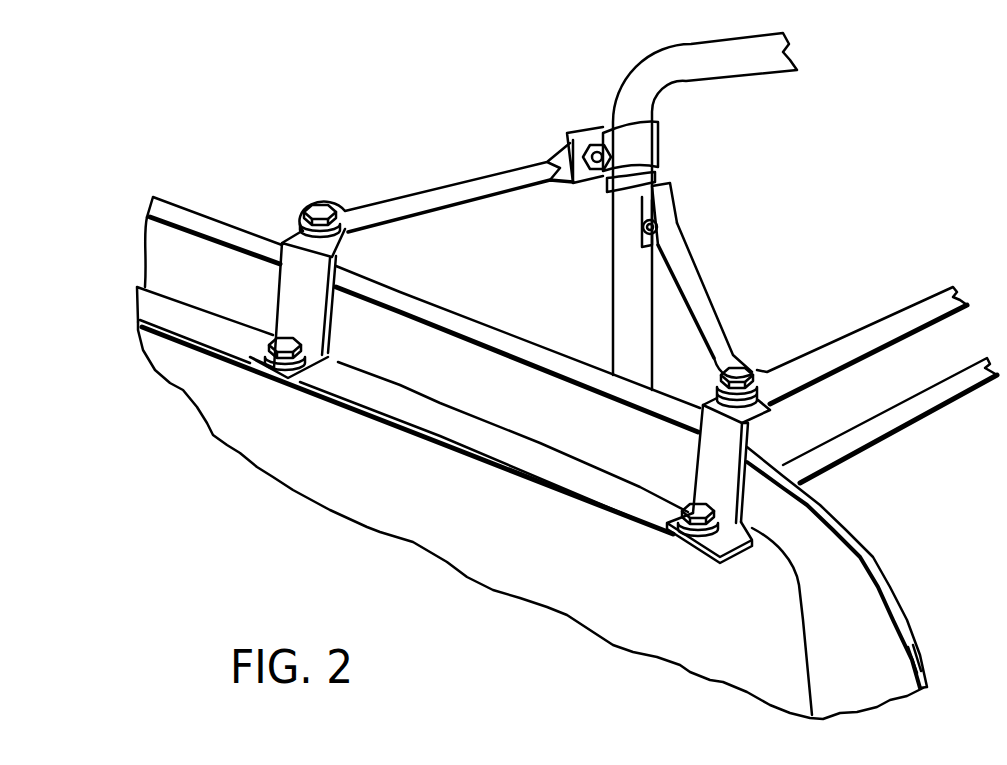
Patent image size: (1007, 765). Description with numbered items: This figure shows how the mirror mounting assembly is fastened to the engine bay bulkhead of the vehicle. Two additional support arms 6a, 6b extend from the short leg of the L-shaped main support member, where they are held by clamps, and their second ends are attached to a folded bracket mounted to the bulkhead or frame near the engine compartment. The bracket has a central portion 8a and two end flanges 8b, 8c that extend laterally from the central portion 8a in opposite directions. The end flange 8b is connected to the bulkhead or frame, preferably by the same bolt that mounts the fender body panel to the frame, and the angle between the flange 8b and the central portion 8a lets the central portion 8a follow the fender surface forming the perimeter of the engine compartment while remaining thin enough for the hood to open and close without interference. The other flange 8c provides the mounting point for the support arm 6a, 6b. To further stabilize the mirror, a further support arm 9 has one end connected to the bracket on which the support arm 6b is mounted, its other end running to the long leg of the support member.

The additional support arm 6a is at (470, 178).
The additional support arm 6b is at (703, 277).
The central portion 8a is at (712, 455).
The end flange 8b is at (700, 538).
The end flange 8c is at (773, 413).
The further support arm 9 is at (838, 340).